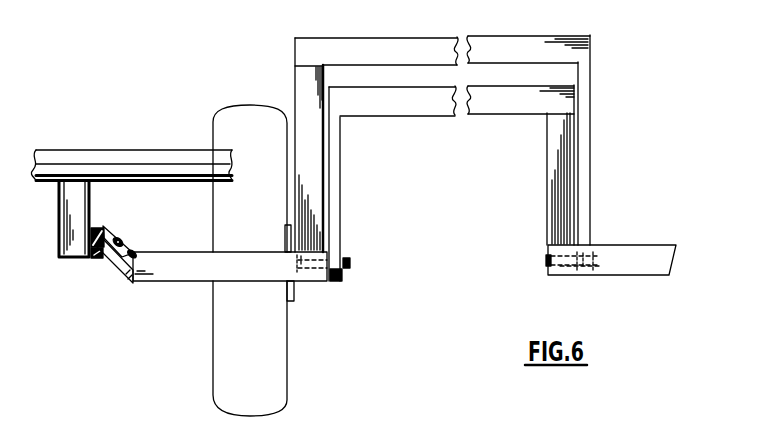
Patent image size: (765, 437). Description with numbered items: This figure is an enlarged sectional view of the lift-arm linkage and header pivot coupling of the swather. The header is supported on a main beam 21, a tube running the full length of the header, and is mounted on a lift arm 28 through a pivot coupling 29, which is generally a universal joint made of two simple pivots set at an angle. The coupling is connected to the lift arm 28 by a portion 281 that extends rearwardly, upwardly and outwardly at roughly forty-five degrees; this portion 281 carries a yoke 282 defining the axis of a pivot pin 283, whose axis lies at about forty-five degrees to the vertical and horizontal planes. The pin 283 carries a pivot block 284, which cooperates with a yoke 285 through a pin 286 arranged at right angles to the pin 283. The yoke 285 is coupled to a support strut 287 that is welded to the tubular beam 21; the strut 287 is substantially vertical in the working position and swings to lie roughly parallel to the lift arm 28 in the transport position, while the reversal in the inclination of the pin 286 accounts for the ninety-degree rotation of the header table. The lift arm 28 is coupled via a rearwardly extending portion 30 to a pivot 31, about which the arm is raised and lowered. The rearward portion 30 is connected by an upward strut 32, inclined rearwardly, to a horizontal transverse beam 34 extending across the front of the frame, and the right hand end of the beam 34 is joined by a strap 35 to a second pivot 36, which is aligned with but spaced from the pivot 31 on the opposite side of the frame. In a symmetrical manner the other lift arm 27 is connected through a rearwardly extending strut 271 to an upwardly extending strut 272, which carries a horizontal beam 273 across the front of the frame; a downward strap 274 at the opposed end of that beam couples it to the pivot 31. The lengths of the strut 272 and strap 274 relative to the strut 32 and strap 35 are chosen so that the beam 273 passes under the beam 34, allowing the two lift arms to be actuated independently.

The main beam 21 is at (165, 148).
The support strut 287 is at (64, 207).
The pivot coupling 29 is at (108, 259).
The yoke 285 is at (96, 227).
The pivot block 284 is at (105, 233).
The pivot pin 283 is at (124, 242).
The portion 281 is at (136, 255).
The pin 286 is at (100, 259).
The yoke 282 is at (107, 276).
The lift arm 28 is at (212, 246).
The rearwardly extending portion 30 is at (297, 274).
The pivot 31 is at (347, 259).
The upward strut 32 is at (298, 144).
The horizontal transverse beam 34 is at (441, 37).
The downward strap 274 is at (342, 145).
The horizontal beam 273 is at (509, 116).
The strap 35 is at (589, 158).
The upwardly extending strut 272 is at (548, 205).
The lift arm 27 is at (644, 245).
The second pivot 36 is at (547, 262).
The rearwardly extending strut 271 is at (569, 275).